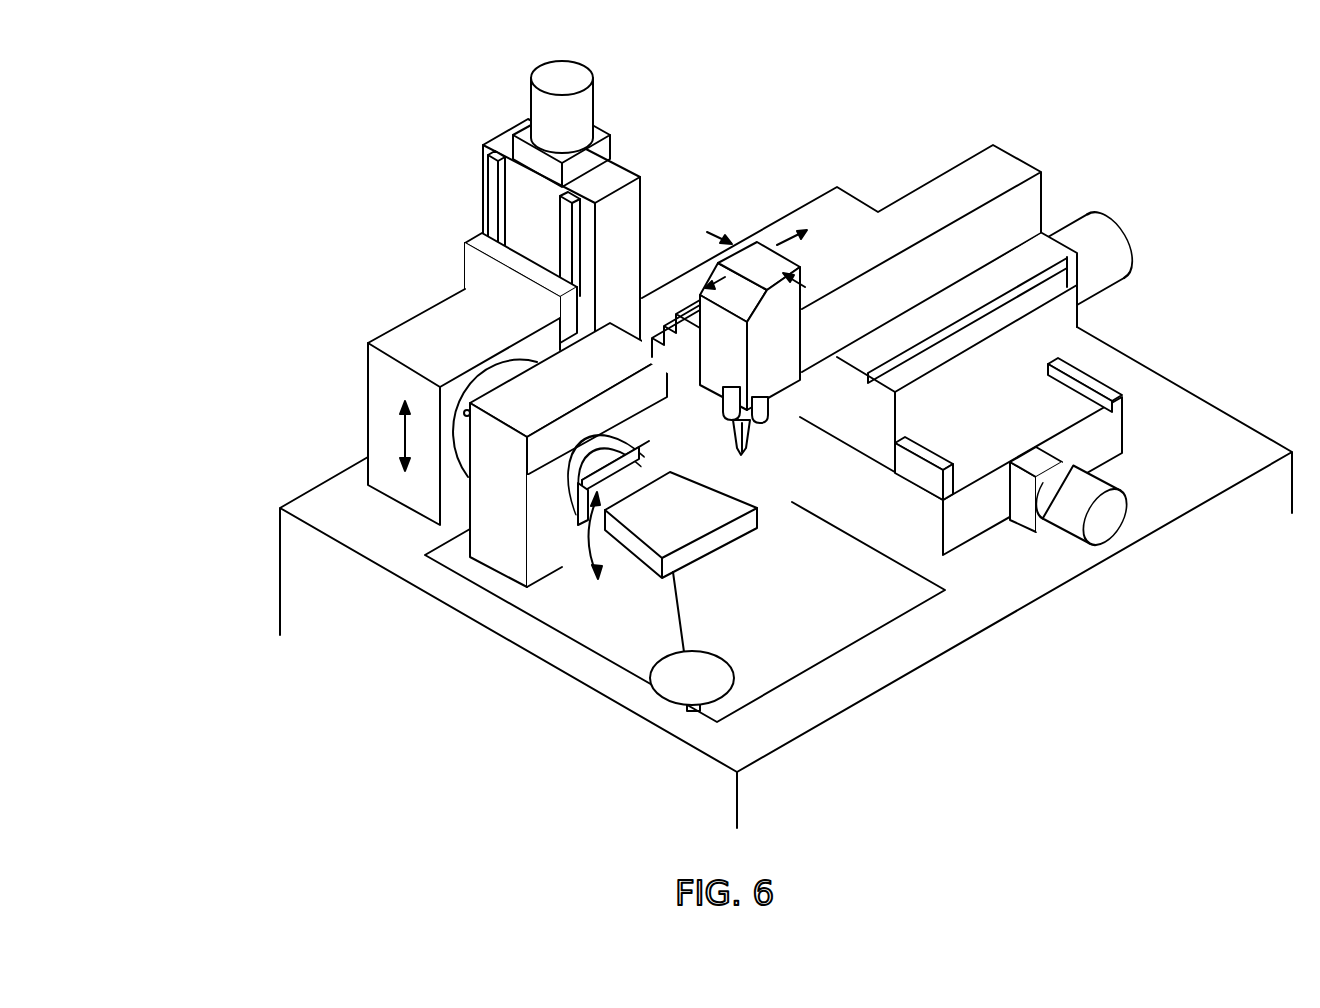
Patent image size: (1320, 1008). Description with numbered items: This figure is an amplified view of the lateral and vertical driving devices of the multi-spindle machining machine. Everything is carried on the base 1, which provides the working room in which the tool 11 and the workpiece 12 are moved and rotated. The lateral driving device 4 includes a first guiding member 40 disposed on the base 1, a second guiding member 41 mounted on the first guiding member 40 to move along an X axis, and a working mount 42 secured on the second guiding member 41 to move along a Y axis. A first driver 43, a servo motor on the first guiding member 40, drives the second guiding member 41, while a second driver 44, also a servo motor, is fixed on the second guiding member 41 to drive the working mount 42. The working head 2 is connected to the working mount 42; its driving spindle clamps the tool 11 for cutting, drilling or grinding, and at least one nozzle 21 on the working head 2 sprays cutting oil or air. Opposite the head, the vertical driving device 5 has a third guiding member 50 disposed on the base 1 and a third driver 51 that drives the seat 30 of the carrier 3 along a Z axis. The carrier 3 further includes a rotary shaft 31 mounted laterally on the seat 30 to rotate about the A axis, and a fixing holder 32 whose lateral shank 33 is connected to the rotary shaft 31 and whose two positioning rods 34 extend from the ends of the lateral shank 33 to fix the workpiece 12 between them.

The base 1 is at (290, 565).
The working head 2 is at (749, 380).
The carrier 3 is at (533, 608).
The lateral driving device 4 is at (1044, 371).
The vertical driving device 5 is at (463, 280).
The tool 11 is at (750, 455).
The workpiece 12 is at (703, 543).
The nozzle 21 is at (767, 445).
The seat 30 is at (375, 400).
The rotary shaft 31 is at (590, 445).
The fixing holder 32 is at (655, 604).
The lateral shank 33 is at (618, 492).
The positioning rods 34 is at (648, 562).
The first guiding member 40 is at (1115, 432).
The second guiding member 41 is at (1068, 325).
The working mount 42 is at (922, 195).
The first driver 43 is at (1113, 520).
The second driver 44 is at (1103, 230).
The third guiding member 50 is at (482, 200).
The third driver 51 is at (585, 75).